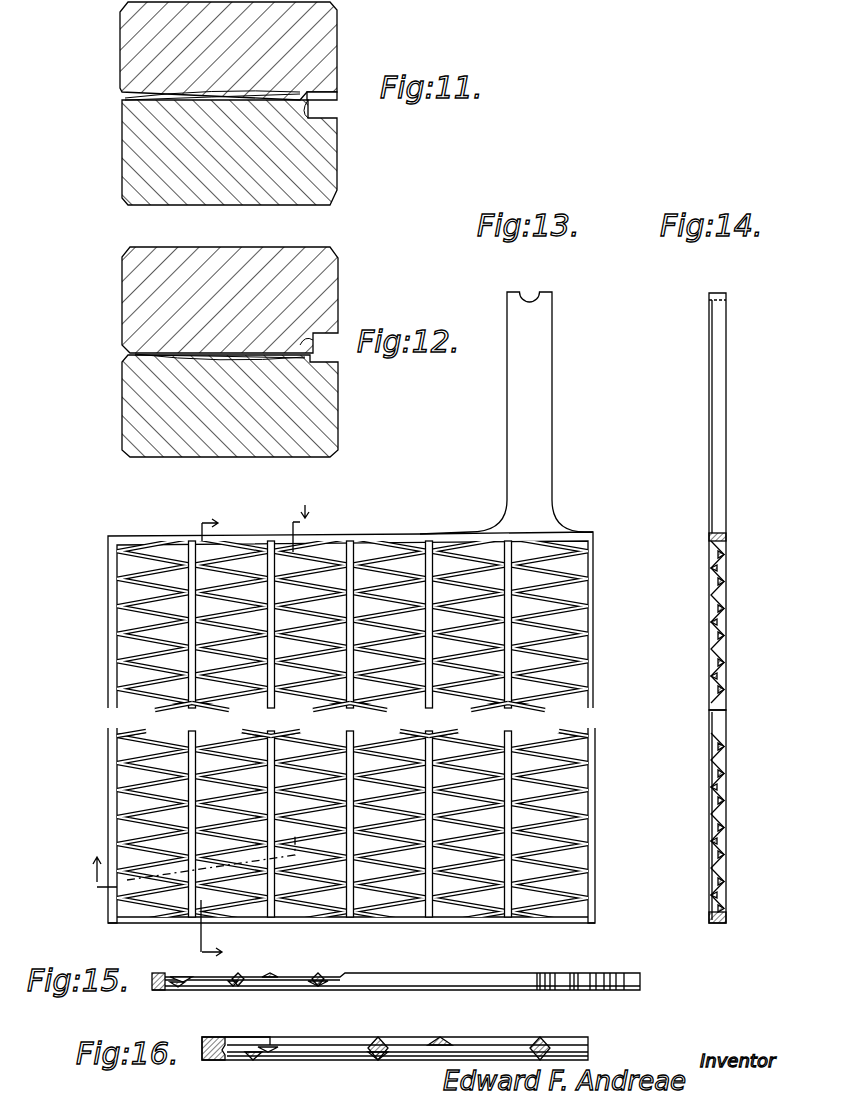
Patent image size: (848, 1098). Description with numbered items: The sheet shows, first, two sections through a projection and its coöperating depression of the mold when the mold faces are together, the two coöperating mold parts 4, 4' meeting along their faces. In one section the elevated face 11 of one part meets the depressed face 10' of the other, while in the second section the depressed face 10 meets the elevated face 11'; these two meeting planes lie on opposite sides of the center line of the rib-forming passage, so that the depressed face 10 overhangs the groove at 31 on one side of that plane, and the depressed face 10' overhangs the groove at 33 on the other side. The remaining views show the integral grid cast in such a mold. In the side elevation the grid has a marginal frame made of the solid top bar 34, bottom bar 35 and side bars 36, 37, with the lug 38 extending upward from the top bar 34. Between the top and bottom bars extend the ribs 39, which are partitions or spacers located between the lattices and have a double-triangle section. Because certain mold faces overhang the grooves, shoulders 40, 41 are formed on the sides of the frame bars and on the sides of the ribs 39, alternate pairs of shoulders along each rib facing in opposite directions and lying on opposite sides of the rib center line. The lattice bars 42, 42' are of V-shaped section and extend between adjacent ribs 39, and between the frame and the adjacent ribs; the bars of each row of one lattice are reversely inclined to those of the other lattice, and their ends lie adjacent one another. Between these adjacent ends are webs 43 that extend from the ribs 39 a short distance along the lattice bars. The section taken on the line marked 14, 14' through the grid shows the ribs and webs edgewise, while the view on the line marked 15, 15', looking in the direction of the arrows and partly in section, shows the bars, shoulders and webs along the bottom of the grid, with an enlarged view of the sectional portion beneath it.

In FIG. 11, the mold part 4 is at (245, 152).
In FIG. 12, the mold part 4 is at (247, 352).
In FIG. 11, the mold part 4' is at (244, 51).
In FIG. 11, the depressed face 10 is at (249, 79).
In FIG. 12, the depressed face 10' is at (257, 371).
In FIG. 12, the elevated face 11 is at (337, 325).
In FIG. 11, the elevated face 11' is at (342, 118).
In FIG. 13, the section line 14— 14 is at (204, 935).
In FIG. 13, the section line 14—14 14' is at (206, 521).
In FIG. 13, the section line 15— 15 is at (180, 866).
In FIG. 13, the section line 15—15 15' is at (314, 528).
In FIG. 11, the overhang 31 is at (125, 100).
In FIG. 12, the overhang 33 is at (133, 354).
In FIG. 13, the top bar 34 is at (223, 544).
In FIG. 14, the top bar 34 is at (724, 535).
In FIG. 15, the top bar 34 is at (458, 973).
In FIG. 16, the top bar 34 is at (395, 1048).
In FIG. 13, the bottom bar 35 is at (260, 922).
In FIG. 14, the bottom bar 35 is at (724, 921).
In FIG. 13, the side bar 36 is at (112, 770).
In FIG. 15, the side bar 36 is at (155, 991).
In FIG. 16, the side bar 36 is at (207, 1062).
In FIG. 13, the side bar 37 is at (595, 780).
In FIG. 13, the lug 38 is at (535, 422).
In FIG. 14, the lug 38 is at (726, 409).
In FIG. 15, the lug 38 is at (593, 977).
In FIG. 13, the rib 39 is at (437, 702).
In FIG. 15, the rib 39 is at (240, 975).
In FIG. 16, the rib 39 is at (388, 1043).
In FIG. 13, the shoulder 40 is at (120, 700).
In FIG. 16, the shoulder 40 is at (228, 1037).
In FIG. 13, the shoulder 41 is at (203, 693).
In FIG. 16, the shoulder 41 is at (370, 1040).
In FIG. 13, the lattice bar 42 is at (369, 713).
In FIG. 14, the lattice bar 42 is at (743, 731).
In FIG. 15, the lattice bar 42 is at (179, 959).
In FIG. 16, the lattice bar 42 is at (286, 1071).
In FIG. 13, the lattice bar 42' is at (352, 723).
In FIG. 14, the lattice bar 42' is at (692, 731).
In FIG. 15, the lattice bar 42' is at (291, 963).
In FIG. 16, the lattice bar 42' is at (462, 1025).
In FIG. 13, the web 43 is at (202, 568).
In FIG. 14, the web 43 is at (722, 618).
In FIG. 15, the web 43 is at (178, 988).
In FIG. 16, the web 43 is at (240, 1062).